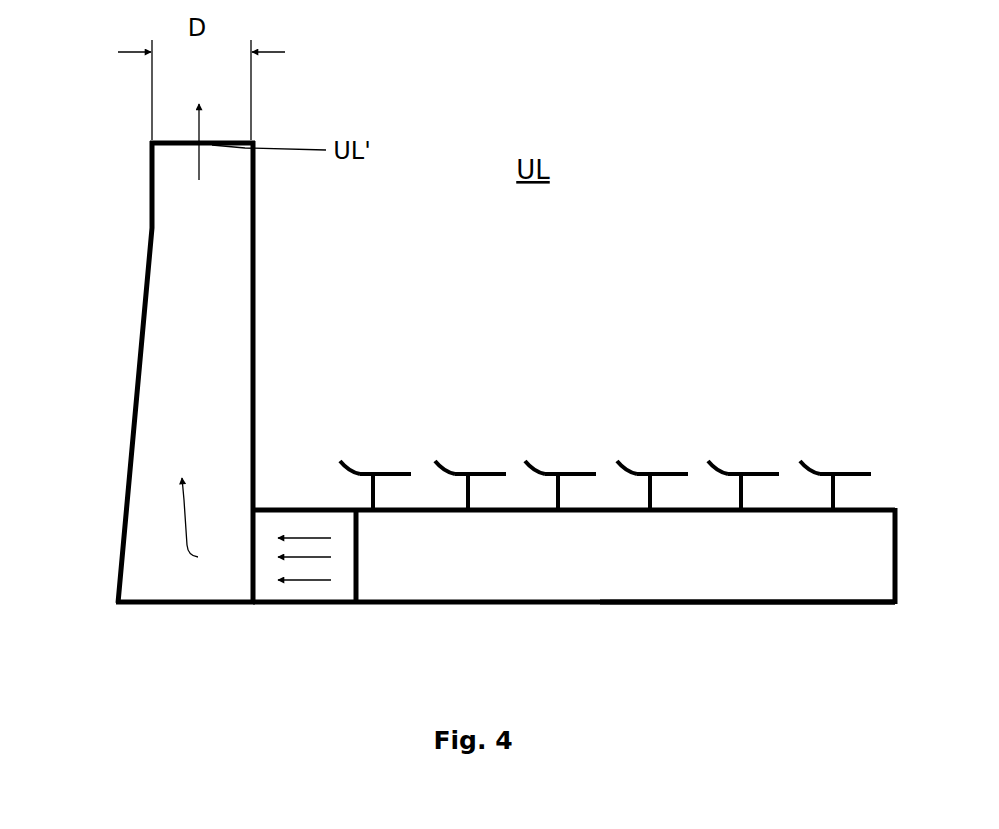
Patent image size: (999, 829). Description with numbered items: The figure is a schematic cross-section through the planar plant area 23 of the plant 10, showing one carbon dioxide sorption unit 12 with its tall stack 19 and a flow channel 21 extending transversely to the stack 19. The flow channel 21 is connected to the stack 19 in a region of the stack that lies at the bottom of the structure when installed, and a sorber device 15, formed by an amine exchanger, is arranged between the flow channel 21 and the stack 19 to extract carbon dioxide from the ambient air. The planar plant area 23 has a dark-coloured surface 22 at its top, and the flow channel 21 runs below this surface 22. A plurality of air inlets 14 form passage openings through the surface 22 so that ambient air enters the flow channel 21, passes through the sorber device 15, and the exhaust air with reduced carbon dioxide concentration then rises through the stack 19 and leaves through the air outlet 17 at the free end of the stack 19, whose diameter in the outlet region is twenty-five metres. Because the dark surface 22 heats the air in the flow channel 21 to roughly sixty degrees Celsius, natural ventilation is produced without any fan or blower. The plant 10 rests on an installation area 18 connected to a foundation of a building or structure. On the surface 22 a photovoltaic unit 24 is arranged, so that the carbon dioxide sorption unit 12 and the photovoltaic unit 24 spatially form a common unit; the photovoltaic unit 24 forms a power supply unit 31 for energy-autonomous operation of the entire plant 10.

The plant 10 is at (803, 218).
The carbon dioxide sorption unit 12 is at (393, 250).
The air inlets 14 is at (566, 557).
The sorber device 15 is at (287, 585).
The air outlet 17 is at (175, 142).
The installation area 18 is at (827, 605).
The stack 19 is at (205, 390).
The flow channel 21 is at (574, 556).
The surface 22 is at (895, 510).
The planar plant area 23 is at (727, 211).
The photovoltaic unit 24 is at (636, 312).
The power supply unit 31 is at (581, 427).